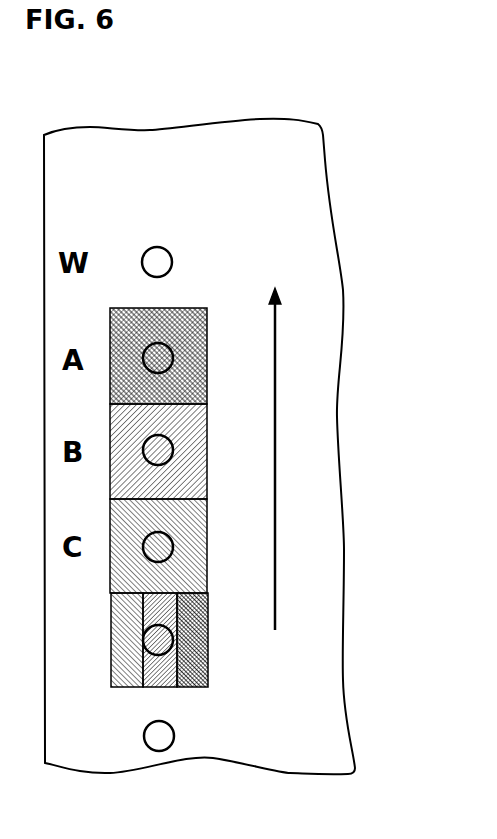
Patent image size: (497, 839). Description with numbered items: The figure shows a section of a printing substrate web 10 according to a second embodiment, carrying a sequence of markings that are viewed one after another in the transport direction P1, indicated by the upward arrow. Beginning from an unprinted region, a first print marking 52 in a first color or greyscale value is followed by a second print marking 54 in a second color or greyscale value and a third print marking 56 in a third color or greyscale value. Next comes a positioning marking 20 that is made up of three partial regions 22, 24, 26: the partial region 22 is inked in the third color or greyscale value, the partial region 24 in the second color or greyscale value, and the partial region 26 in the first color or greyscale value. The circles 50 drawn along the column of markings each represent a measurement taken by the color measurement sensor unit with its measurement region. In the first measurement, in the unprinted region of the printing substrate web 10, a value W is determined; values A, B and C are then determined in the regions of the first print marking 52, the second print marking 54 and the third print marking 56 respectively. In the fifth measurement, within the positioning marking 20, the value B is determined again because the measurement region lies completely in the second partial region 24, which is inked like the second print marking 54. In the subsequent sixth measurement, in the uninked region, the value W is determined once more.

The printing substrate web 10 is at (262, 146).
The positioning marking 20 is at (155, 678).
The partial region 22 is at (123, 622).
The partial region 24 is at (160, 686).
The partial region 26 is at (192, 648).
The circles 50 is at (164, 249).
The first print marking 52 is at (188, 380).
The second print marking 54 is at (188, 472).
The third print marking 56 is at (188, 567).
The transport direction P1 is at (277, 450).